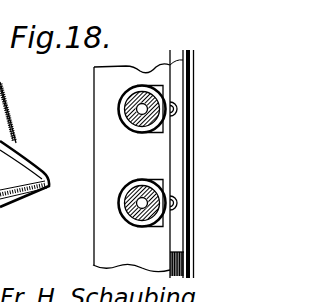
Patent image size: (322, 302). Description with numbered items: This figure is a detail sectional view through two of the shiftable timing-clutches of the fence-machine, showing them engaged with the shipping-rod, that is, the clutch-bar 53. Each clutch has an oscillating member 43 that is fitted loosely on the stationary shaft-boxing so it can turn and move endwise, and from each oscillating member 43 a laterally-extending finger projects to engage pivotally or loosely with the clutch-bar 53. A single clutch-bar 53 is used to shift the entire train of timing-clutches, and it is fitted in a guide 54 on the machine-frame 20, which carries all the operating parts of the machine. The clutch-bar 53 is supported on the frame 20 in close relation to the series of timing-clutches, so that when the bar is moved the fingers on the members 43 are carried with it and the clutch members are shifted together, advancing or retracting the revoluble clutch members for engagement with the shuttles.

The upright frame 20 is at (99, 118).
The oscillating member 43 is at (153, 132).
The clutch-bar 53 is at (176, 148).
The guide 54 is at (186, 261).